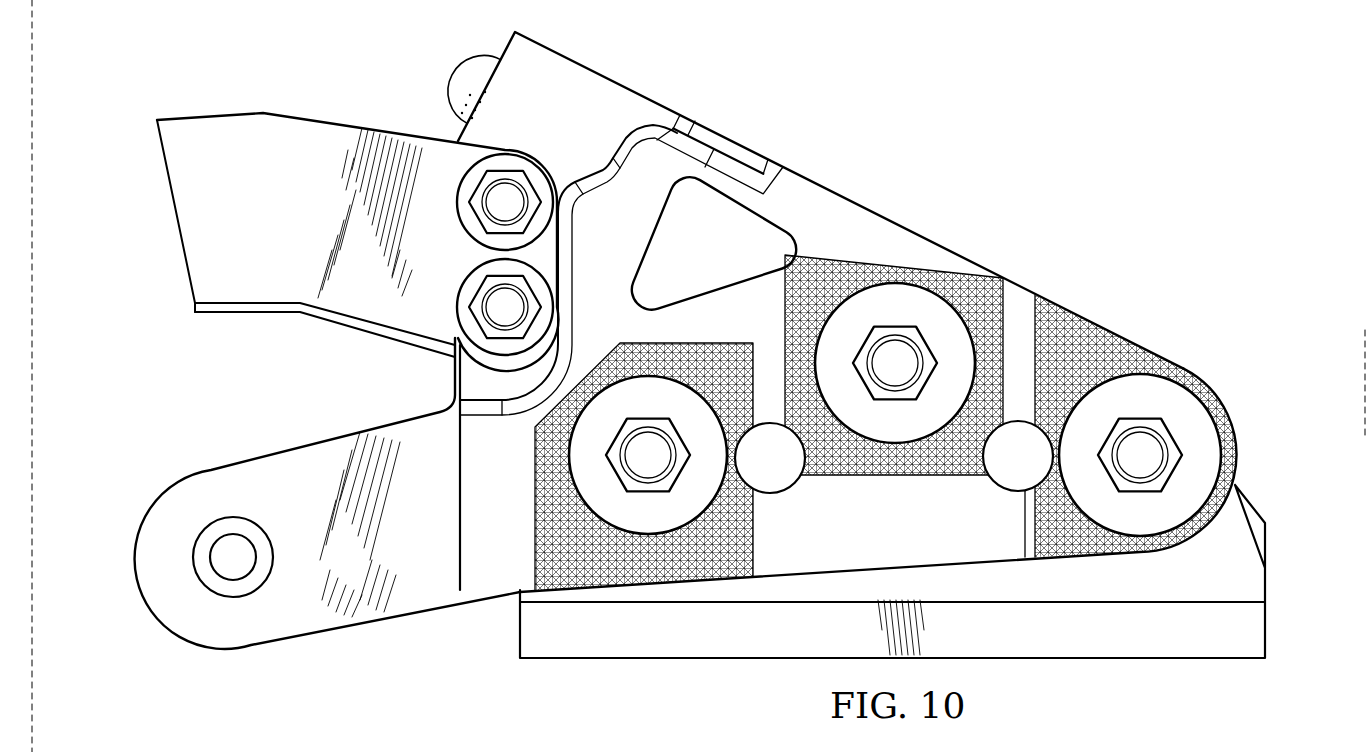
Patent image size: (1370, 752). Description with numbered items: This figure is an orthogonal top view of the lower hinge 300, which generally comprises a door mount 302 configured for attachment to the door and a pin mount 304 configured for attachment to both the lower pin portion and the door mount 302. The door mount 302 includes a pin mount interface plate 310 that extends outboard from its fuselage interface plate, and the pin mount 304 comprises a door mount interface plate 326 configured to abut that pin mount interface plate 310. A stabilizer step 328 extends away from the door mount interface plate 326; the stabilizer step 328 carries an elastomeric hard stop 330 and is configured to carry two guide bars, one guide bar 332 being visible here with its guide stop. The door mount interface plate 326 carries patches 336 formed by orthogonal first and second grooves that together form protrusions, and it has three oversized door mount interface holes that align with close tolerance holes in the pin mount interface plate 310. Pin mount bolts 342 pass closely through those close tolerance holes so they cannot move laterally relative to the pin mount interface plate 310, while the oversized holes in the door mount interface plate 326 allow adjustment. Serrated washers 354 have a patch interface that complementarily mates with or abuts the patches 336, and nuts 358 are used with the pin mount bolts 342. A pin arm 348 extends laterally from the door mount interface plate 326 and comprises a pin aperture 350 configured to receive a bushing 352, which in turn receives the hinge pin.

The lower hinge 300 is at (1003, 122).
The door mount 302 is at (1257, 627).
The pin mount 304 is at (822, 182).
The pin mount interface plate 310 is at (1257, 585).
The door mount interface plate 326 is at (882, 216).
The stabilizer step 328 is at (578, 64).
The elastomeric hard stop 330 is at (458, 80).
The guide bar 332 is at (215, 118).
The patch 336 is at (980, 273).
The pin mount bolt 342 is at (633, 460).
The pin arm 348 is at (237, 648).
The pin aperture 350 is at (207, 587).
The bushing 352 is at (203, 565).
The serrated washer 354 is at (915, 295).
The nut 358 is at (636, 458).